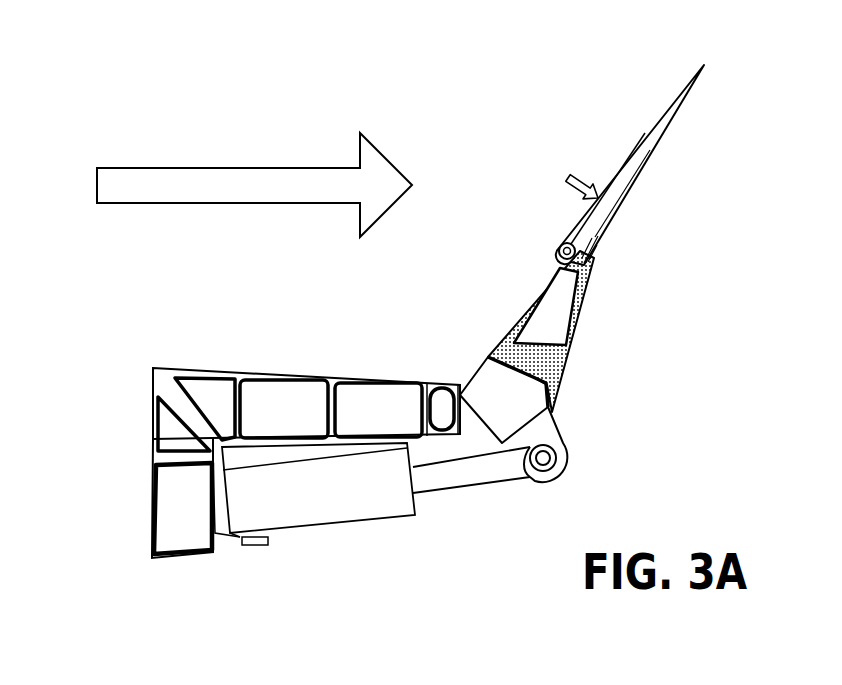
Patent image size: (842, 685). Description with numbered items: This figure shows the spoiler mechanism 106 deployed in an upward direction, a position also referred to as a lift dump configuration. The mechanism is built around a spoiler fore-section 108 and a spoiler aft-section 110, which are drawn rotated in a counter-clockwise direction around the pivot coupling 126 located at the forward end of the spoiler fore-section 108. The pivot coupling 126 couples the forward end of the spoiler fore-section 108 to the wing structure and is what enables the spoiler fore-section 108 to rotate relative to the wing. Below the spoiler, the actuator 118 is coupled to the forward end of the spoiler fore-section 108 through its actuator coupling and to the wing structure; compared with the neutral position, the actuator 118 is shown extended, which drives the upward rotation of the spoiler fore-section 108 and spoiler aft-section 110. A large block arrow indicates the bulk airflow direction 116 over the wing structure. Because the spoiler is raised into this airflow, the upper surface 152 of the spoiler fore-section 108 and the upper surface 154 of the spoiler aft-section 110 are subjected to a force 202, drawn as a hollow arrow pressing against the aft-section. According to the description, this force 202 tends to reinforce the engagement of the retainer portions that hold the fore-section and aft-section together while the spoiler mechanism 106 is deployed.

The spoiler mechanism 106 is at (198, 300).
The spoiler fore-section 108 is at (474, 314).
The spoiler aft-section 110 is at (548, 212).
The bulk airflow direction 116 is at (146, 168).
The actuator 118 is at (352, 523).
The pivot coupling 126 is at (483, 408).
The upper surface of the spoiler fore-section 152 is at (530, 290).
The upper surface of the spoiler aft-section 154 is at (642, 140).
The force 202 is at (567, 177).